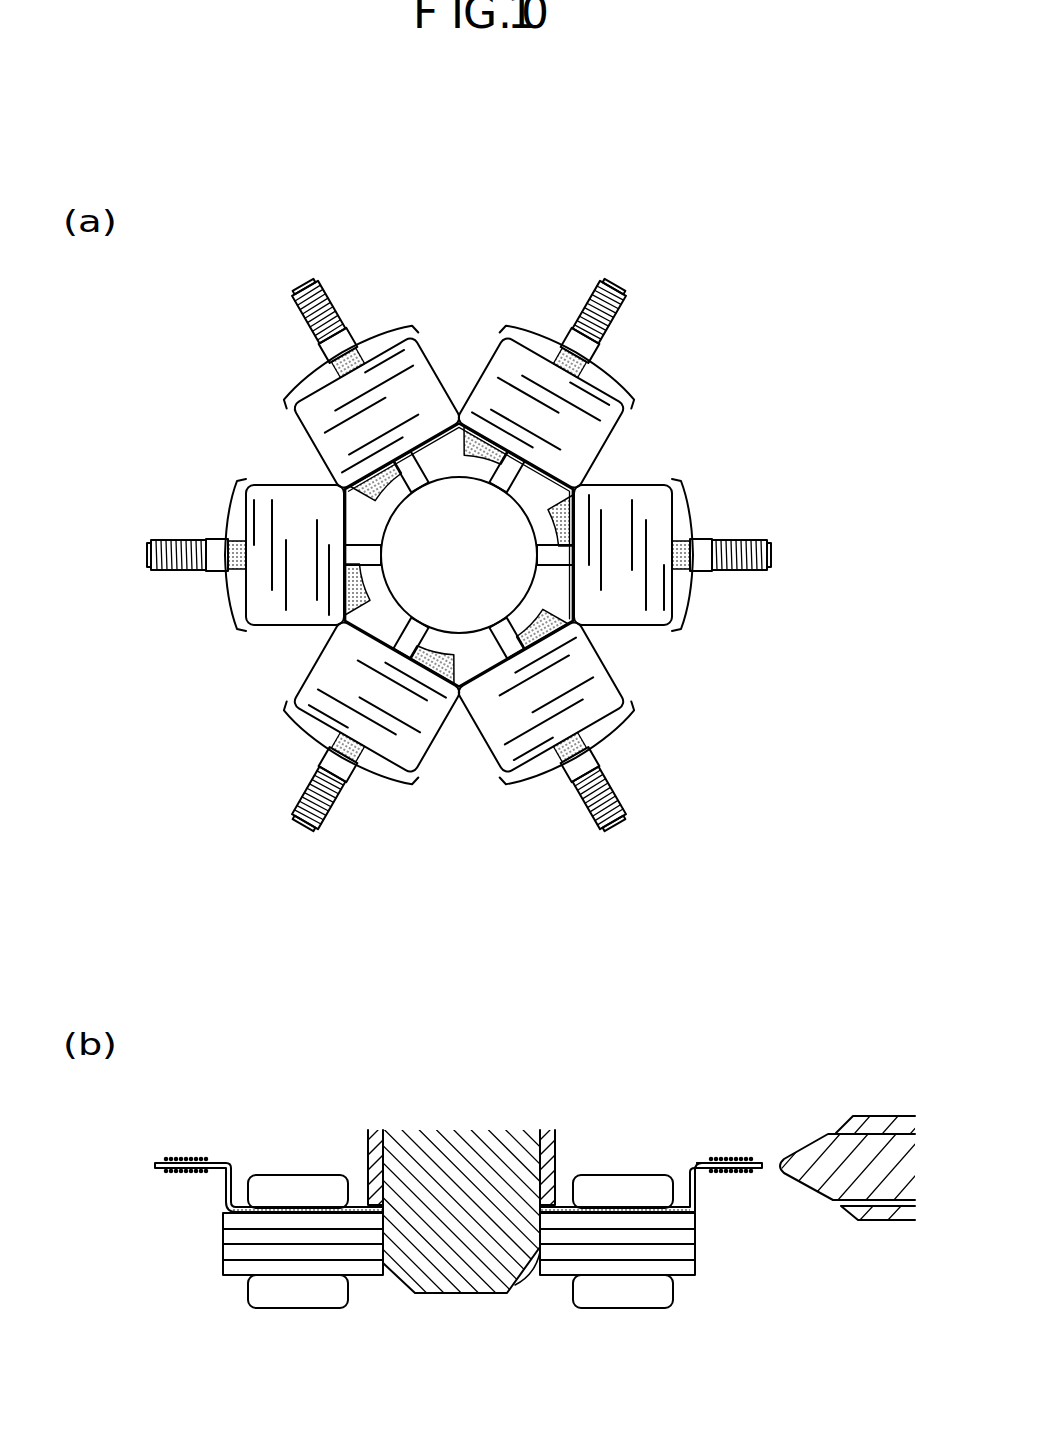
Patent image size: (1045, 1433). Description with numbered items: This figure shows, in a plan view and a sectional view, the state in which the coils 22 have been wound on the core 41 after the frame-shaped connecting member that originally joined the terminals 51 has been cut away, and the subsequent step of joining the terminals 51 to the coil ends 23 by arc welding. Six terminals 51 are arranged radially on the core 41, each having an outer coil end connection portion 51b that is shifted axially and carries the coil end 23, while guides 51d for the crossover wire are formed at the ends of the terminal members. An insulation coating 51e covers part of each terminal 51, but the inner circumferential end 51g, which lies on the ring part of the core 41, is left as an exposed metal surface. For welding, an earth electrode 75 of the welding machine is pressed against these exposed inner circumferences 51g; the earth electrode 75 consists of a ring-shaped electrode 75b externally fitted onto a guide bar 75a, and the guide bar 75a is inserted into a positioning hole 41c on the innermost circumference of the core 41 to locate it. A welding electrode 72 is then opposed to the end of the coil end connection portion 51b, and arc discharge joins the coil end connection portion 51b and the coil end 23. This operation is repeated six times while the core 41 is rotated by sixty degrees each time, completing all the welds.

The coil 22 is at (263, 613).
The coil end 23 is at (210, 545).
The core 41 is at (620, 1252).
The positioning hole 41c is at (507, 1293).
The terminal 51 is at (236, 1204).
The coil end connection portion 51b is at (150, 553).
The guide for a crossover wire 51d is at (445, 410).
The insulation coating 51e is at (343, 580).
The inner circumferential end 51g is at (507, 638).
The welding electrode 72 is at (870, 1115).
The earth electrode 75 is at (449, 1170).
The guide bar 75a is at (467, 1170).
The ring-shaped electrode 75b is at (558, 1205).